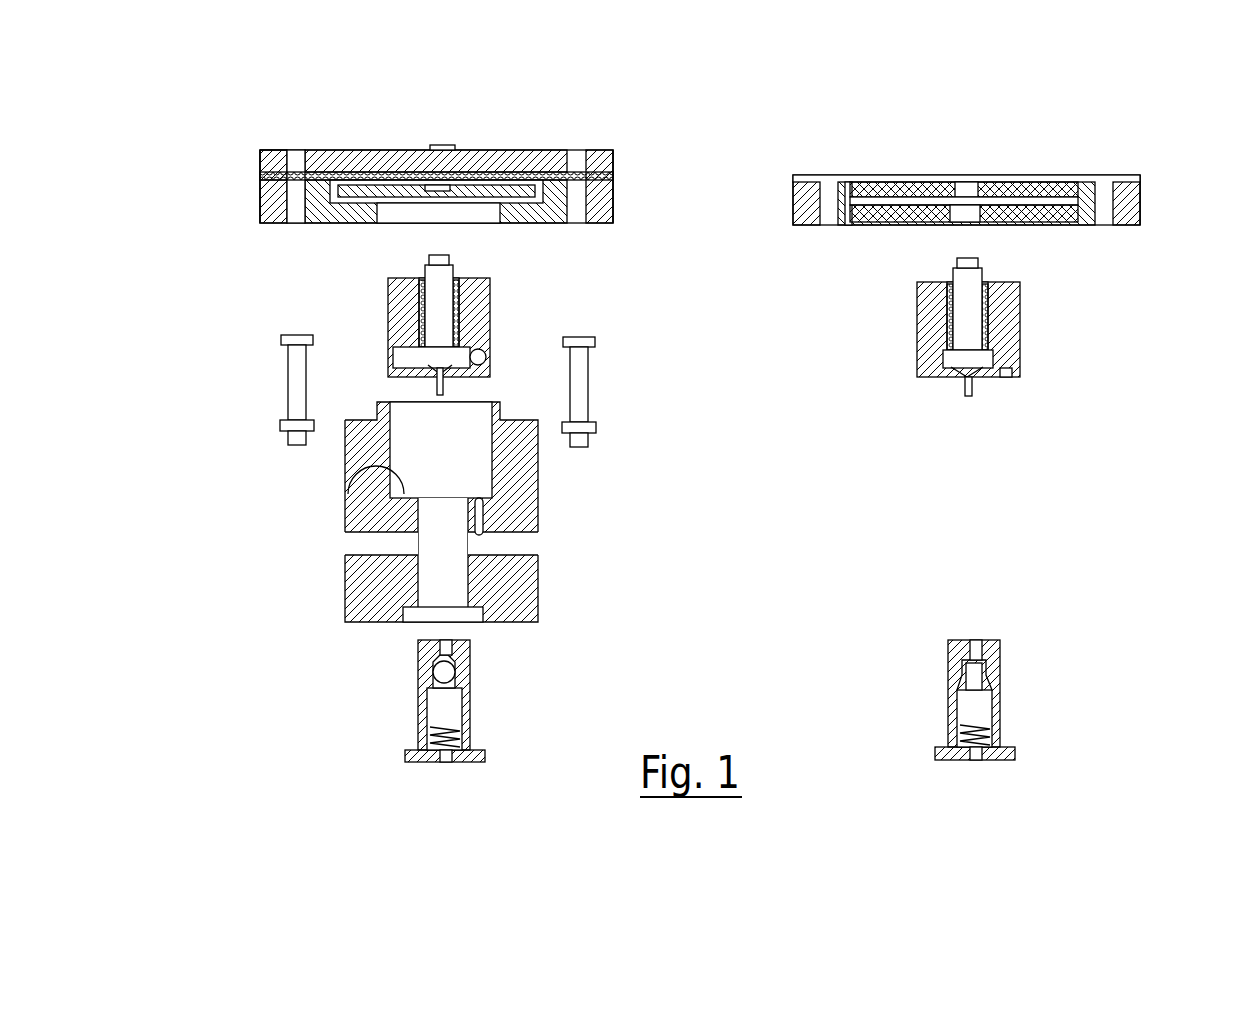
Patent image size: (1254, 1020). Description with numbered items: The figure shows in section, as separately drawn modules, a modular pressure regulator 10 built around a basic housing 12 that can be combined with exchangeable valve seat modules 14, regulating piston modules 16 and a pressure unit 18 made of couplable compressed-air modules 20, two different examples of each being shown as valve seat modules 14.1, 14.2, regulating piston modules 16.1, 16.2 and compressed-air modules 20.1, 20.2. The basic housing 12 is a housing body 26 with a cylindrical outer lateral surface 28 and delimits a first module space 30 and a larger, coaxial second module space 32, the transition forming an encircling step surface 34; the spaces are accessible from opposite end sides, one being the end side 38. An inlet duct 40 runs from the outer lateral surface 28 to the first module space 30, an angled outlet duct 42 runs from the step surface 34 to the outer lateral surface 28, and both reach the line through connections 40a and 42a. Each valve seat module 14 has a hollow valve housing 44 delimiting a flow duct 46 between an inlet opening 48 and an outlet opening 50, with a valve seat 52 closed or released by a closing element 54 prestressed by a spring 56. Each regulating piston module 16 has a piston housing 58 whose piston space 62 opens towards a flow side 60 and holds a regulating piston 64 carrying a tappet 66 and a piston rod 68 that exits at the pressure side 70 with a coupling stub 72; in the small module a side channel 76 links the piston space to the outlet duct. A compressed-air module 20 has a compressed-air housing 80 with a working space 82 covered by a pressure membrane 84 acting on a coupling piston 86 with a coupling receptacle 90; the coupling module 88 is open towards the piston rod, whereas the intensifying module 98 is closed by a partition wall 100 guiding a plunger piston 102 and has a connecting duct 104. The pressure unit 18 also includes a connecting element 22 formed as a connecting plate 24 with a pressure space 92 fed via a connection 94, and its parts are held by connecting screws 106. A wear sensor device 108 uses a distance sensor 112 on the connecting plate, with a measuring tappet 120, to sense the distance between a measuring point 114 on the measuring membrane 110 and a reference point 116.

The modular pressure regulator 10 is at (727, 157).
The basic housing 12 is at (540, 497).
The valve seat module 14 is at (478, 673).
The first valve seat module 14.1 is at (470, 721).
The second valve seat module 14.2 is at (1000, 706).
The regulating piston module 16 is at (498, 291).
The first regulating piston module 16.1 is at (481, 323).
The second regulating piston module 16.2 is at (1008, 338).
The pressure unit 18 is at (448, 148).
The compressed-air module 20 is at (614, 185).
The first compressed-air module 20.1 is at (614, 196).
The second compressed-air module 20.2 is at (1150, 197).
The connecting element 22 is at (273, 145).
The connecting plate 24 is at (596, 165).
The housing body 26 is at (528, 592).
The cylindrical outer lateral surface 28 is at (538, 467).
The first module space 30 is at (460, 578).
The second module space 32 is at (460, 466).
The step surface 34 is at (346, 492).
The end side 38 is at (520, 402).
The inlet duct 40 is at (346, 549).
The connection 40a is at (345, 528).
The outlet duct 42 is at (527, 537).
The connection 42a is at (540, 530).
The valve housing 44 is at (477, 745).
The flow duct 46 is at (426, 688).
The inlet opening 48 is at (428, 722).
The outlet opening 50 is at (448, 642).
The valve seat 52 is at (462, 688).
The closing element 54 is at (438, 667).
The spring 56 is at (447, 751).
The piston housing 58 is at (391, 298).
The flow side 60 is at (390, 381).
The piston space 62 is at (474, 357).
The regulating piston 64 is at (408, 360).
The tappet 66 is at (452, 378).
The piston rod 68 is at (444, 283).
The pressure side 70 is at (397, 272).
The coupling stub 72 is at (456, 197).
The side channel 76 is at (1005, 380).
The compressed-air housing 80 is at (267, 214).
The working space 82 is at (551, 178).
The pressure membrane 84 is at (357, 174).
The coupling piston 86 is at (494, 175).
The coupling module 88 is at (277, 226).
The coupling receptacle 90 is at (447, 188).
The pressure space 92 is at (530, 178).
The connection 94 is at (390, 176).
The intensifying module 98 is at (811, 230).
The partition wall 100 is at (1066, 227).
The plunger piston 102 is at (965, 214).
The connecting duct 104 is at (867, 177).
The connecting screws 106 is at (300, 368).
The wear sensor device 108 is at (436, 146).
The measuring membrane 110 is at (317, 158).
The distance sensor 112 is at (428, 146).
The measuring point 114 is at (510, 215).
The reference point 116 is at (340, 165).
The measuring tappet 120 is at (440, 204).